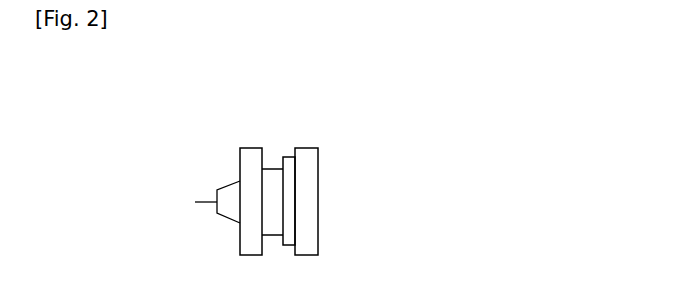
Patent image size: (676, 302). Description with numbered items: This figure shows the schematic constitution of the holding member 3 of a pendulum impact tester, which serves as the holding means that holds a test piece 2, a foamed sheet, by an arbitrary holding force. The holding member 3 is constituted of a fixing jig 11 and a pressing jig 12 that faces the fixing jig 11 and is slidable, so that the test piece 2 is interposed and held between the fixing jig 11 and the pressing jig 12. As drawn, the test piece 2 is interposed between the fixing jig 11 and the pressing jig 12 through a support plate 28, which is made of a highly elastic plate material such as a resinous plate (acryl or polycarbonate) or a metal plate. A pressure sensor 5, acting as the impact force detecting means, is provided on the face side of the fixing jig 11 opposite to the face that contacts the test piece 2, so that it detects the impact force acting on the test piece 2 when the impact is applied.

The holding member 3 is at (178, 141).
The pressure sensor 5 is at (221, 204).
The fixing jig 11 is at (244, 240).
The test piece 2 is at (265, 215).
The support plate 28 is at (283, 156).
The pressing jig 12 is at (297, 152).